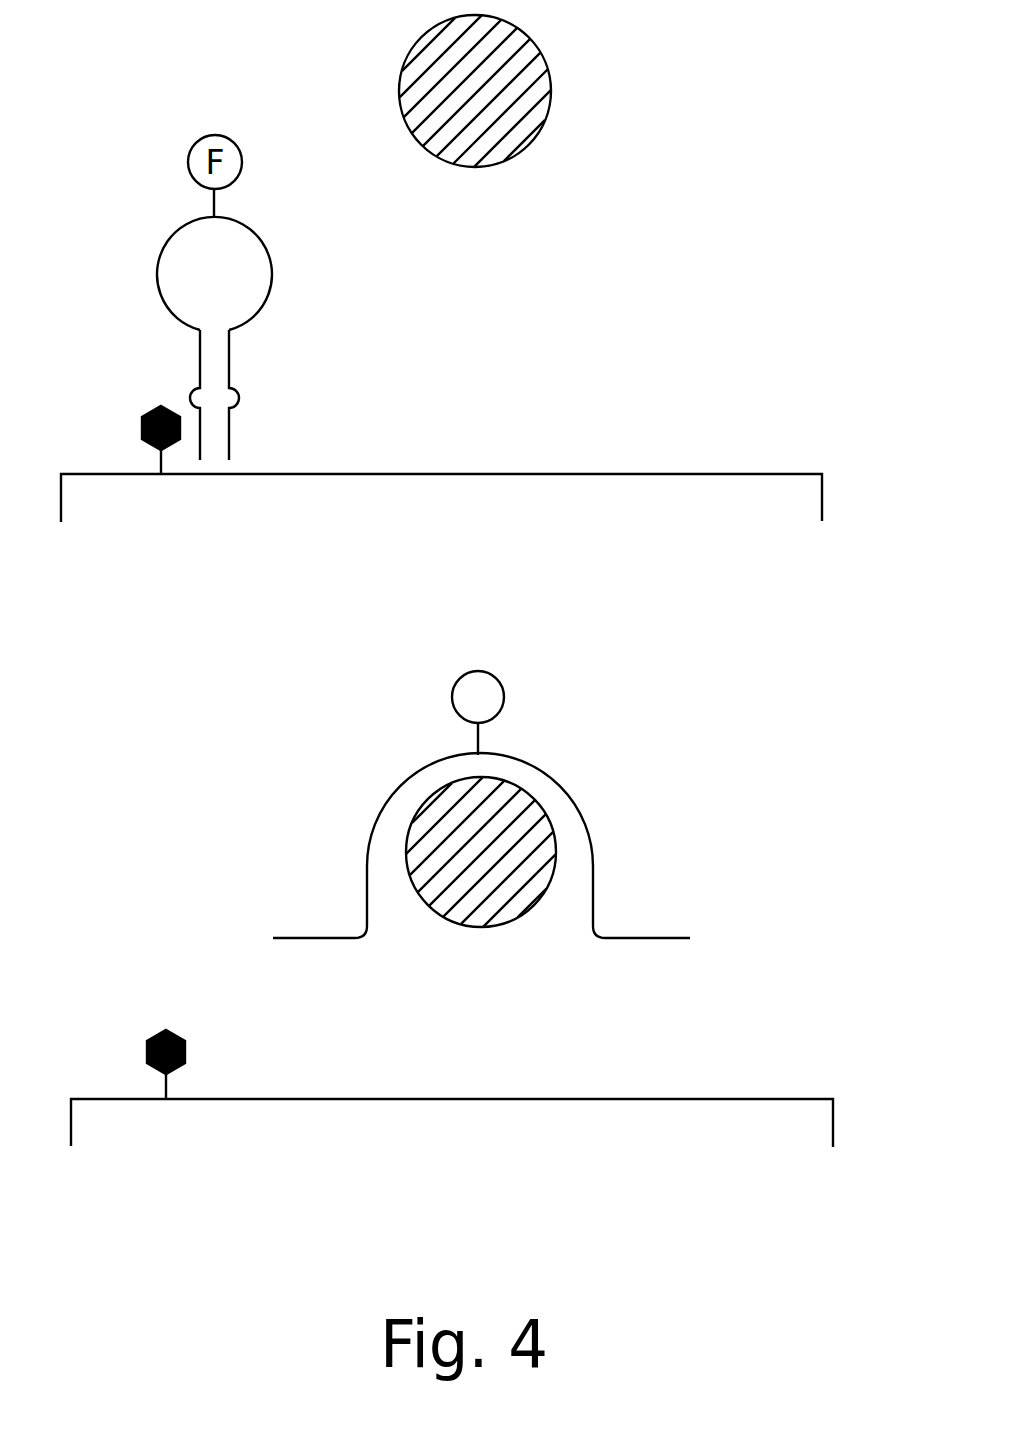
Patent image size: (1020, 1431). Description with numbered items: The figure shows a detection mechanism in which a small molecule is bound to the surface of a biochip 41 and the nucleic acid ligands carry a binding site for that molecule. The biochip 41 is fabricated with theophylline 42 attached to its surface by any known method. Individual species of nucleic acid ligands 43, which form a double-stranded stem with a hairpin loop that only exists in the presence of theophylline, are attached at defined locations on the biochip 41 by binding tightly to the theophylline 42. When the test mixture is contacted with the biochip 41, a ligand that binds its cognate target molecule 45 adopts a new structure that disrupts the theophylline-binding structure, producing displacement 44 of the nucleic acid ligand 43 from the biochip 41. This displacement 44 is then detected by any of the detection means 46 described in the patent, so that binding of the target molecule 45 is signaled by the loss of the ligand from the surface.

The biochip 41 is at (478, 496).
The theophylline 42 is at (113, 440).
The nucleic acid ligand 43 is at (232, 338).
The displacement 44 is at (481, 845).
The target molecule 45 is at (481, 882).
The detection means 46 is at (504, 713).